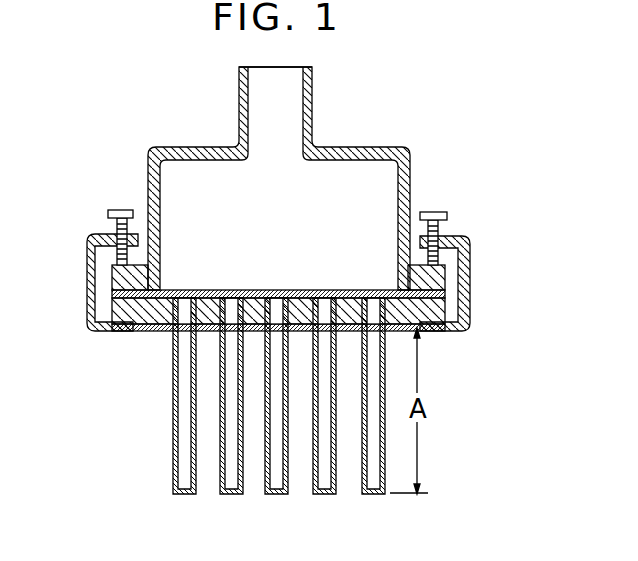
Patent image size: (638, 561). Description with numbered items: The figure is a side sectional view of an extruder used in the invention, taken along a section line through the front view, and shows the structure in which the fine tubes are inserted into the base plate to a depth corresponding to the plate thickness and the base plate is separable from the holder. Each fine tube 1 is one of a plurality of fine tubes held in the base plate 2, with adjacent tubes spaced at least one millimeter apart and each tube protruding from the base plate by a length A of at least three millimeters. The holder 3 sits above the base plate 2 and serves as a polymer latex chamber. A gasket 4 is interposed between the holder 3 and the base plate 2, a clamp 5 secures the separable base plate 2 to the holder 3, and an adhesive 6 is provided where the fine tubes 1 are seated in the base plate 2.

The fine tube 1 is at (385, 470).
The base plate 2 is at (440, 325).
The holder 3 is at (151, 162).
The gasket 4 is at (118, 298).
The clamp 5 is at (472, 258).
The adhesive 6 is at (150, 332).